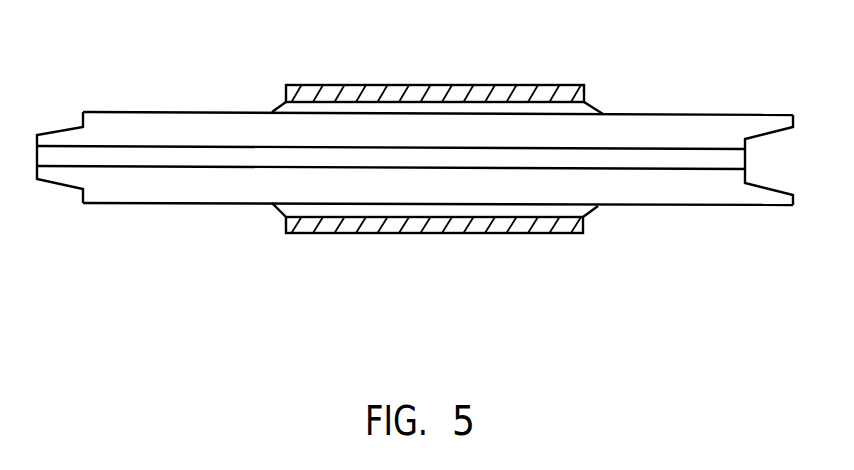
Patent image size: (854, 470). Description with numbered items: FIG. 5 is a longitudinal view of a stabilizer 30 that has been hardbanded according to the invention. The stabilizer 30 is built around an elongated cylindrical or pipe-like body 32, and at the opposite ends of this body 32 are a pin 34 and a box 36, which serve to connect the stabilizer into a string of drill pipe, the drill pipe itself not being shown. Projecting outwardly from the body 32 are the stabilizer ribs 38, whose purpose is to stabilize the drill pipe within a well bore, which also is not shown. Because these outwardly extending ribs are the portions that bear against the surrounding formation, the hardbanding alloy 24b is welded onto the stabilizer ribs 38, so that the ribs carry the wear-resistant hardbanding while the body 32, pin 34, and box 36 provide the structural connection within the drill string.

The stabilizer 30 is at (645, 108).
The body 32 is at (182, 204).
The pin 34 is at (60, 129).
The box 36 is at (762, 115).
The hardbanding alloy 24b is at (357, 233).
The stabilizer ribs 38 is at (598, 207).